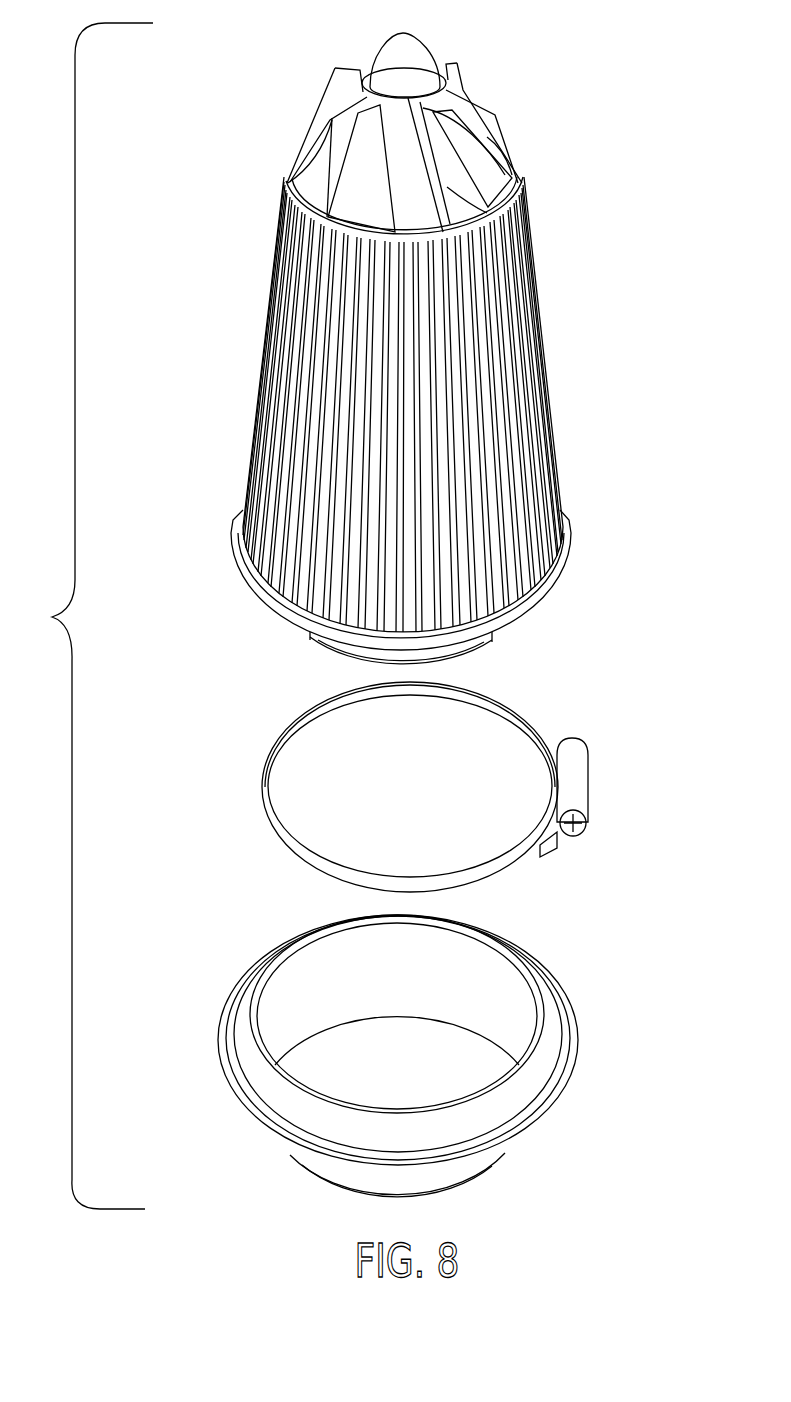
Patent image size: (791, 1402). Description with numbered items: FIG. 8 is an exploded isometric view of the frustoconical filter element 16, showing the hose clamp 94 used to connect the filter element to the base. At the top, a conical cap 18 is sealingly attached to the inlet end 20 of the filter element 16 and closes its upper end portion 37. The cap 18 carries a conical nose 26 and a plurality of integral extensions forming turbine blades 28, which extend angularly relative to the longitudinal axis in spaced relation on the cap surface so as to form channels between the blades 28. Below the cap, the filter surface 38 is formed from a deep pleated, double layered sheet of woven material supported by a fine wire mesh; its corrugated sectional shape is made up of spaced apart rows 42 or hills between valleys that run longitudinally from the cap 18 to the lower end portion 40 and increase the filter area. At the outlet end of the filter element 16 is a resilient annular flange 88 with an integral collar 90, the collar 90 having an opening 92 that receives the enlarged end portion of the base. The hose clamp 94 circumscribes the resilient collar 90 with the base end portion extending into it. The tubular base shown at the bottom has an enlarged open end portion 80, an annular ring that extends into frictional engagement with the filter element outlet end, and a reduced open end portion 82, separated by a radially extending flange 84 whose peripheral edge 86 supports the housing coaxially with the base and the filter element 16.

The filter element 16 is at (547, 300).
The conical cap 18 is at (460, 72).
The inlet end 20 is at (527, 213).
The conical nose 26 is at (400, 34).
The turbine blades 28 is at (333, 80).
The upper end portion 37 is at (281, 210).
The filter surface 38 is at (556, 426).
The lower end portion 40 is at (563, 503).
The rows 42 is at (278, 343).
The resilient annular flange 88 is at (243, 573).
The collar 90 is at (470, 650).
The opening 92 is at (337, 658).
The hose clamp 94 is at (590, 781).
The enlarged open end portion 80 is at (563, 1015).
The flange 84 is at (537, 1063).
The peripheral edge 86 is at (550, 1117).
The reduced open end portion 82 is at (462, 1182).